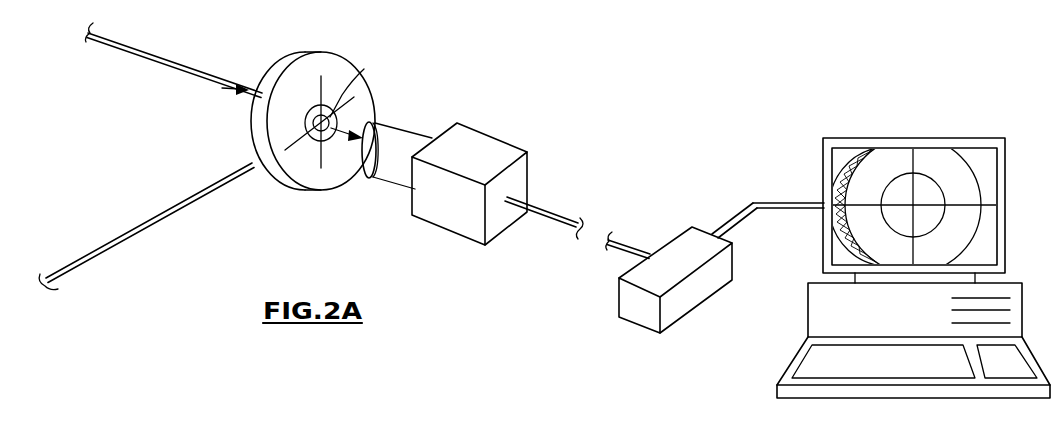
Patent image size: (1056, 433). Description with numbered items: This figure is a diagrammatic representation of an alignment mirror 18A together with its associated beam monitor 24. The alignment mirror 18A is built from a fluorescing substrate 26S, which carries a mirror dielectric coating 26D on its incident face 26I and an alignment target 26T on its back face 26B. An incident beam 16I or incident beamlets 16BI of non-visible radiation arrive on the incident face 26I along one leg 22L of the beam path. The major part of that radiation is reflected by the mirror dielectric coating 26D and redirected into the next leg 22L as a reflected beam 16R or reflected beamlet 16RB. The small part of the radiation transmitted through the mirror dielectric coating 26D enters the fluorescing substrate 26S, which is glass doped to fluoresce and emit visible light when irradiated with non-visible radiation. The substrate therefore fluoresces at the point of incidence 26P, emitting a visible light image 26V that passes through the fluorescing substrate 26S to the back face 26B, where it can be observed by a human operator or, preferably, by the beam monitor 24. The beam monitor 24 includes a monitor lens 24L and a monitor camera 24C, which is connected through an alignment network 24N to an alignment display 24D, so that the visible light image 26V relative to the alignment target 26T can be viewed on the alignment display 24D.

The leg of beam path 22L is at (169, 156).
The incident beam 16I is at (158, 77).
The incident beamlet 16BI is at (161, 77).
The reflected beam 16R is at (169, 226).
The reflected beamlet 16RB is at (173, 208).
The alignment mirror 18A is at (196, 124).
The mirror dielectric coating 26D is at (297, 148).
The back face 26B is at (287, 183).
The fluorescing substrate 26S is at (322, 191).
The alignment target 26T is at (365, 78).
The point of incidence 26P is at (222, 88).
The incident face 26I is at (248, 76).
The visible light image 26V is at (339, 143).
The beam monitor 24 is at (507, 171).
The monitor lens 24L is at (431, 134).
The monitor camera 24C is at (528, 173).
The alignment network 24N is at (745, 194).
The alignment display 24D is at (934, 138).